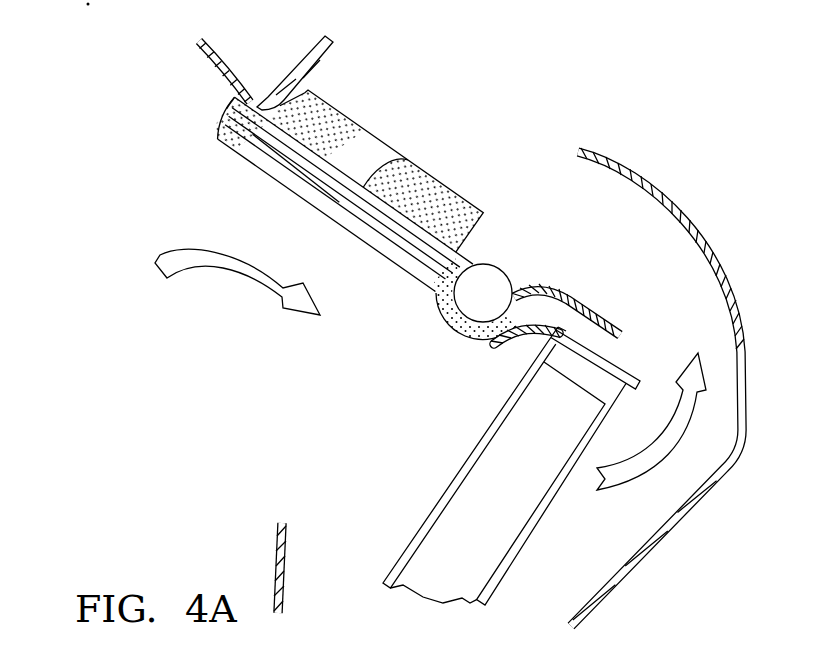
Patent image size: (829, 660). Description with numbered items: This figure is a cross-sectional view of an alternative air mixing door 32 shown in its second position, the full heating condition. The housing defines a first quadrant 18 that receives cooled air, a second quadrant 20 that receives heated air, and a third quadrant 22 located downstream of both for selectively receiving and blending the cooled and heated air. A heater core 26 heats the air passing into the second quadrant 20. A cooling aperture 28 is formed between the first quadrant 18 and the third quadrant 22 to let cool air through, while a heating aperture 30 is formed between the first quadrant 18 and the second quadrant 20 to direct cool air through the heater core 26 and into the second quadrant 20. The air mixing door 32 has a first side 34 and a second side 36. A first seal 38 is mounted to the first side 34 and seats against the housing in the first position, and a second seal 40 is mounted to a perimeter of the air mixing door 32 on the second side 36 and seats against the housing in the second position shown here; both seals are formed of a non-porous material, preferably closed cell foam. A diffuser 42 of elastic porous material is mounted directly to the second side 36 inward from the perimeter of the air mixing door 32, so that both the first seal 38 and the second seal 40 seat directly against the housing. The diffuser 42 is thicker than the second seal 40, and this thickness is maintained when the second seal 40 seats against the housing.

The first quadrant 18 is at (272, 394).
The second quadrant 20 is at (572, 541).
The third quadrant 22 is at (439, 137).
The heater core 26 is at (488, 545).
The cooling aperture 28 is at (312, 92).
The heating aperture 30 is at (287, 530).
The air mixing door 32 is at (227, 155).
The first side 34 is at (413, 272).
The second side 36 is at (470, 253).
The first seal 38 is at (382, 243).
The second seal 40 is at (408, 160).
The diffuser 42 is at (353, 130).